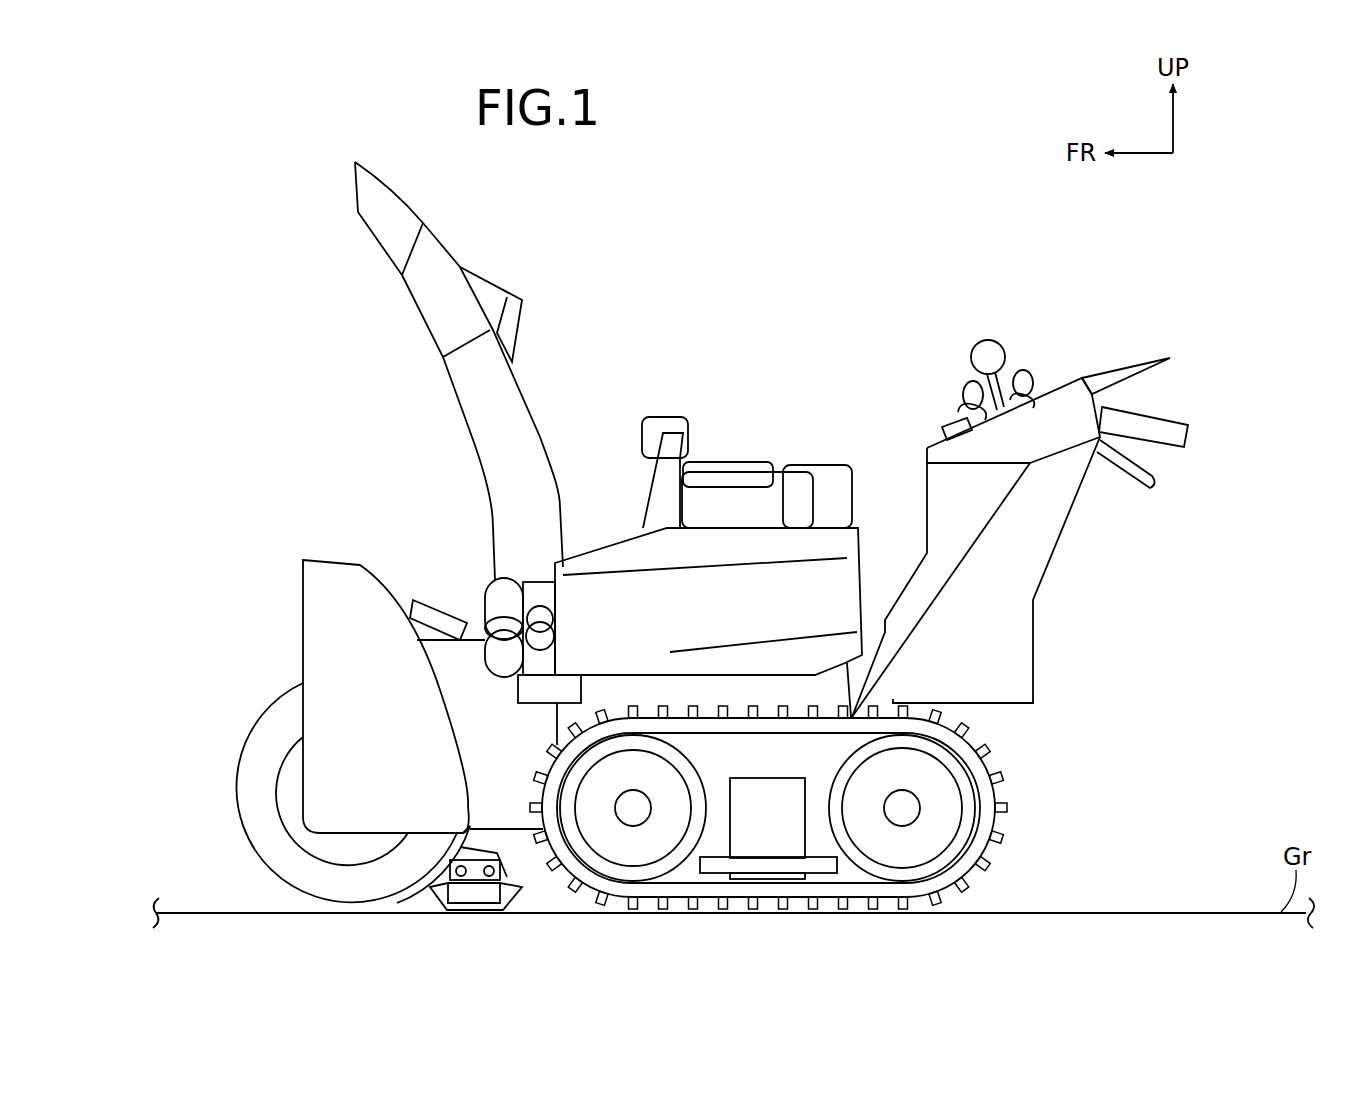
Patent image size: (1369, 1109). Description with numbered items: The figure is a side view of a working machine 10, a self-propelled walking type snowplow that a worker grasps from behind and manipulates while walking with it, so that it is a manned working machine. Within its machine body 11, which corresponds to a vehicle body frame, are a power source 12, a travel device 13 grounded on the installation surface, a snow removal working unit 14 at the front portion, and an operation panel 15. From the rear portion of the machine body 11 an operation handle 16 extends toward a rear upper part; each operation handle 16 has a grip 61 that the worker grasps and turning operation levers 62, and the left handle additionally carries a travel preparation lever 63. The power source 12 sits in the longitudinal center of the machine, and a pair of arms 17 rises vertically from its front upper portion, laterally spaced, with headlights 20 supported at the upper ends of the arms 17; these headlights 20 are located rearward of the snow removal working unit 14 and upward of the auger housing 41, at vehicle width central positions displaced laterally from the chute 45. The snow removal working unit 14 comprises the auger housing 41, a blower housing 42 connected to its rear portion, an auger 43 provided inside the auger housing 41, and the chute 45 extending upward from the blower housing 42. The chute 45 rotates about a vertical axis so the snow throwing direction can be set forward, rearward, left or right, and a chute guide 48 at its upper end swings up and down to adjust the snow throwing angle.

The working machine 10 is at (250, 199).
The machine body 11 is at (818, 683).
The power source 12 is at (862, 543).
The travel device 13 is at (1013, 807).
The snow removal working unit 14 is at (276, 560).
The operation panel 15 is at (1053, 365).
The operation handle 16 is at (1196, 432).
The arm 17 is at (662, 506).
The headlight 20 is at (642, 432).
The auger housing 41 is at (317, 613).
The blower housing 42 is at (503, 733).
The auger 43 is at (253, 802).
The chute 45 is at (464, 433).
The chute guide 48 is at (410, 240).
The grip 61 is at (1183, 411).
The turning operation lever 62 is at (1158, 483).
The travel preparation lever 63 is at (1143, 358).